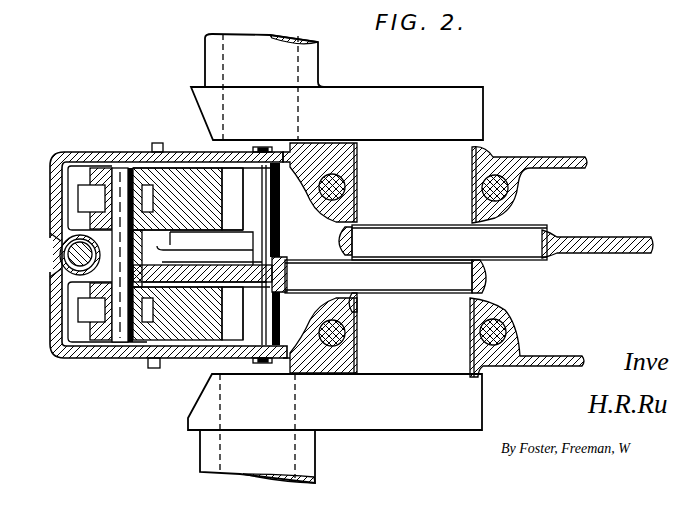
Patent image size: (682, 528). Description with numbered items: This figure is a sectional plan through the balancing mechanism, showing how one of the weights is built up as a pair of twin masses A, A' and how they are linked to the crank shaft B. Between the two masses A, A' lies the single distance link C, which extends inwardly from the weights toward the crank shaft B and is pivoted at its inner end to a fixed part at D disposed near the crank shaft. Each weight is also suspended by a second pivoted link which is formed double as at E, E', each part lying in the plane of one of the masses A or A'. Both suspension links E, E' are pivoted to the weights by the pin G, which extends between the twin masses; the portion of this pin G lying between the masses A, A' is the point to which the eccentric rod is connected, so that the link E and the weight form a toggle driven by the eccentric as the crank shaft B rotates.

The mass A is at (186, 345).
The twin mass A' is at (188, 168).
The crank shaft B is at (420, 258).
The pivoted link C is at (200, 255).
The fixed part D is at (255, 322).
The second pivoted link E is at (65, 311).
The second part of suspension link E' is at (65, 198).
The pin G is at (118, 271).